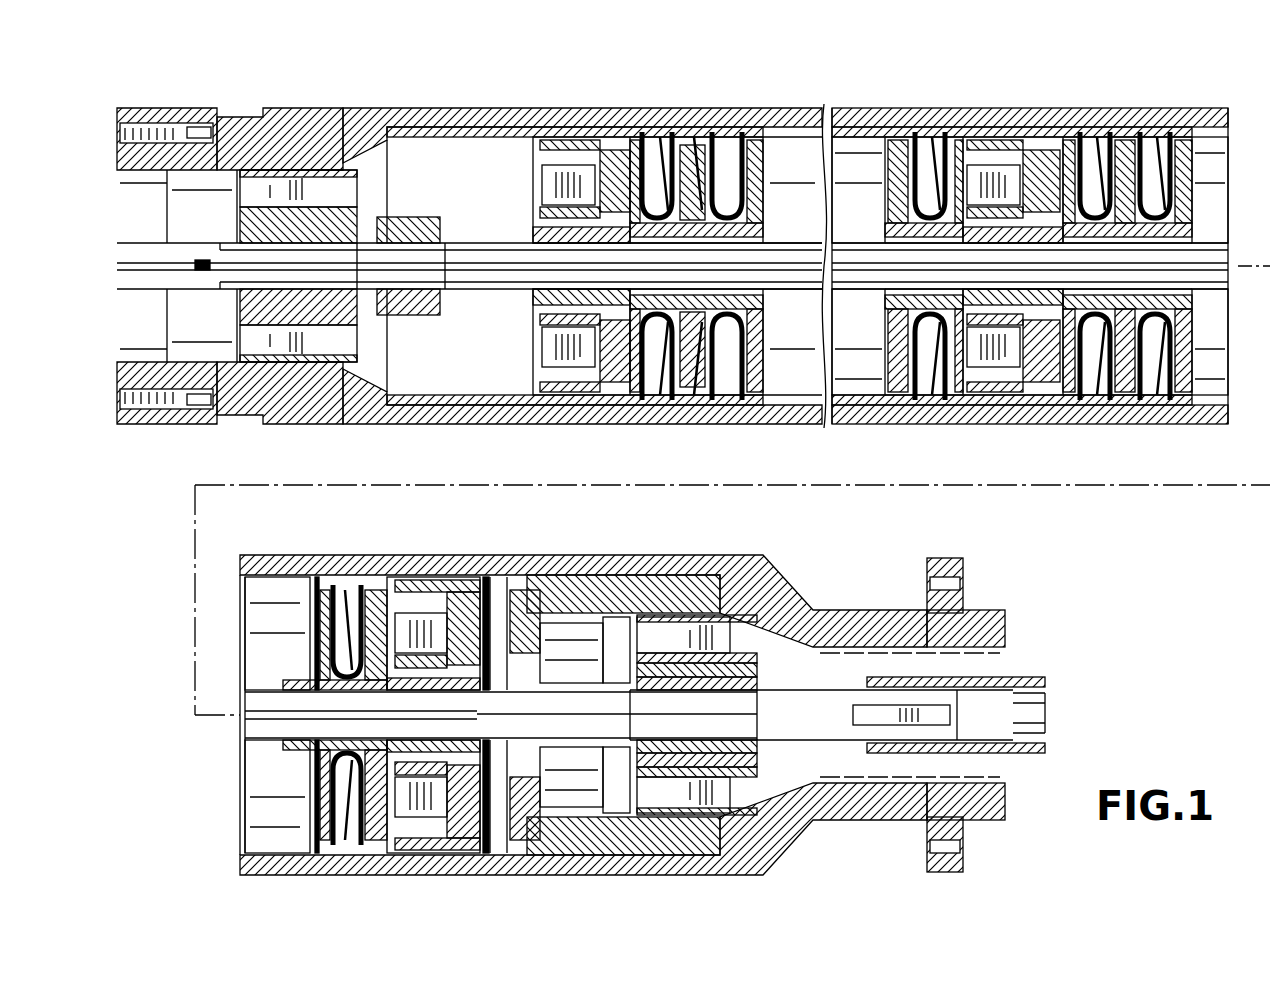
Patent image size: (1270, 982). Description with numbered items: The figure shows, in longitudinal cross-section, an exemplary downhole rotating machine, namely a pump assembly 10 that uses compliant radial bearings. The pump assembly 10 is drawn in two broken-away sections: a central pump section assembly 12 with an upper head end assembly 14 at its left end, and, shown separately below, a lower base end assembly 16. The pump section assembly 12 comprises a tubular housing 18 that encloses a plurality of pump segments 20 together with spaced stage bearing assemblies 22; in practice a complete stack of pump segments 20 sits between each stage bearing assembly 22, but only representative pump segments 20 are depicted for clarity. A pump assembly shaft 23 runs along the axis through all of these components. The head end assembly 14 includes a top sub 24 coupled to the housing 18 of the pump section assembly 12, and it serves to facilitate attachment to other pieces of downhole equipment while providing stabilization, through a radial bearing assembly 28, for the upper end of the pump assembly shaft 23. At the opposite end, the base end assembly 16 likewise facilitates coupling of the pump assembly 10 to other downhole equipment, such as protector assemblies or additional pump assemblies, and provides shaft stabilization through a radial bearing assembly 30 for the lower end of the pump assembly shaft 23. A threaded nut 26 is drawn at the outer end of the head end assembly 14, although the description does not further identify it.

The pump assembly 10 is at (1106, 107).
The pump section assembly 12 is at (922, 107).
The head end assembly 14 is at (288, 104).
The base end assembly 16 is at (771, 558).
The housing 18 is at (880, 107).
The pump segments 20 is at (783, 160).
The stage bearing assemblies 22 is at (423, 613).
The pump assembly shaft 23 is at (460, 230).
The top sub 24 is at (244, 116).
The lock nut 26 is at (152, 122).
The radial bearing assembly 28 is at (345, 190).
The radial bearing assembly 30 is at (700, 637).